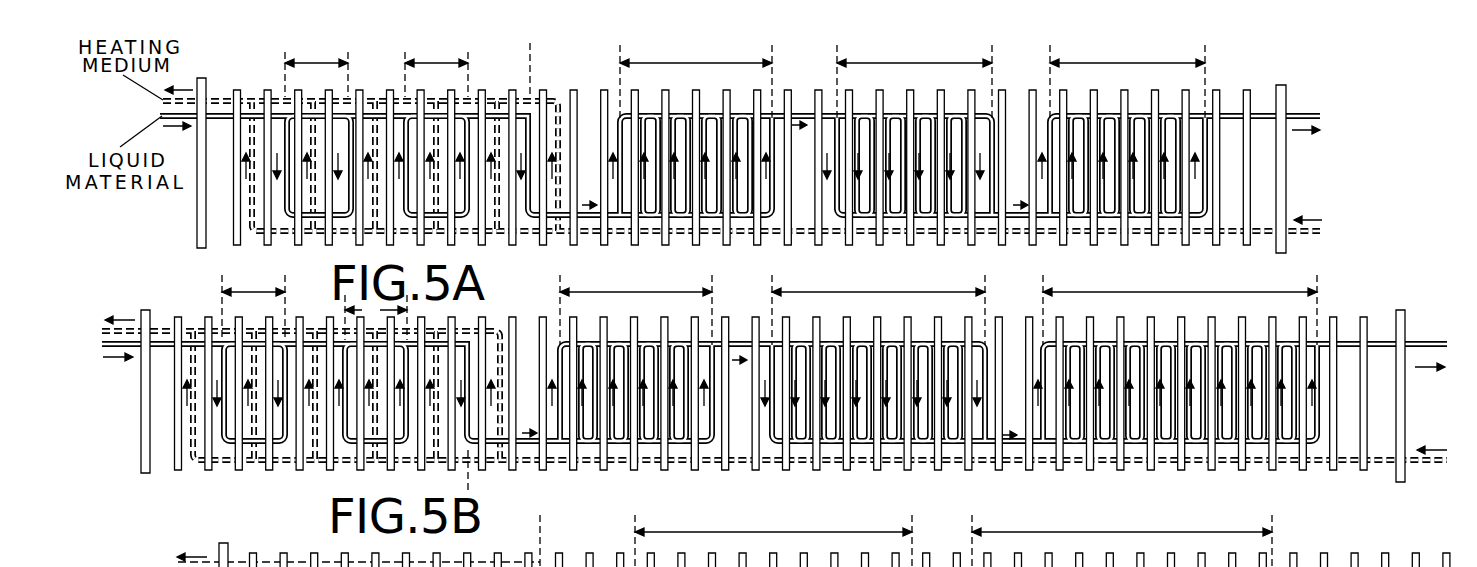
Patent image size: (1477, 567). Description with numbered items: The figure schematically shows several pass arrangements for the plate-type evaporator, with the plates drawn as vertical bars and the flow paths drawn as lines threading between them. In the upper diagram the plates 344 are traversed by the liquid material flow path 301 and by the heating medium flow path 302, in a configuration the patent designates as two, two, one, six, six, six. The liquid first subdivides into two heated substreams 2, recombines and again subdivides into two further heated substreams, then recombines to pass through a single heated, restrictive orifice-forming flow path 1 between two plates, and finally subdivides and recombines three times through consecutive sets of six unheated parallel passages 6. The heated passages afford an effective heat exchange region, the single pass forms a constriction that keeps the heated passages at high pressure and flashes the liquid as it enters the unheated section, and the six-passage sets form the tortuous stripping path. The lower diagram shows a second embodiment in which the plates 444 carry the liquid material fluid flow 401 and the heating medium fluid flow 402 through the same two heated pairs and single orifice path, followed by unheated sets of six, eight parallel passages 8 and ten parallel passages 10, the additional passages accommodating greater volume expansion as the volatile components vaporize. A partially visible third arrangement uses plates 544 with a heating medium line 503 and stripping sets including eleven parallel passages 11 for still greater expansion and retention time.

In FIG. 5A, the single restrictive orifice-forming flow path 1 is at (528, 53).
In FIG. 5B, the single restrictive orifice-forming flow path 1 is at (466, 480).
In FIG. 5C, the single restrictive orifice-forming flow path 1 is at (538, 532).
In FIG. 5A, the set of two heated parallel liquid passages 2 is at (438, 62).
In FIG. 5B, the set of two heated parallel liquid passages 2 is at (255, 291).
In FIG. 5A, the set of six unheated parallel flow passages 6 is at (1130, 62).
In FIG. 5B, the set of six unheated parallel flow passages 6 is at (647, 291).
In FIG. 5B, the set of eight unheated parallel flow passages 8 is at (884, 291).
In FIG. 5B, the set of ten unheated parallel flow passages 10 is at (1172, 291).
In FIG. 5C, the set of ten unheated parallel flow passages 10 is at (779, 531).
In FIG. 5C, the set of eleven unheated parallel flow passages 11 is at (1127, 531).
In FIG. 5A, the liquid material flow path 301 is at (1308, 116).
In FIG. 5A, the heating medium flow path 302 is at (1313, 233).
In FIG. 5A, the plates 344 is at (957, 259).
In FIG. 5B, the liquid material fluid flow 401 is at (1440, 352).
In FIG. 5B, the heating medium fluid flow 402 is at (1430, 464).
In FIG. 5B, the plates 444 is at (1232, 490).
In FIG. 5C, the heating medium tube 503 is at (178, 565).
In FIG. 5C, the plates 544 is at (292, 536).